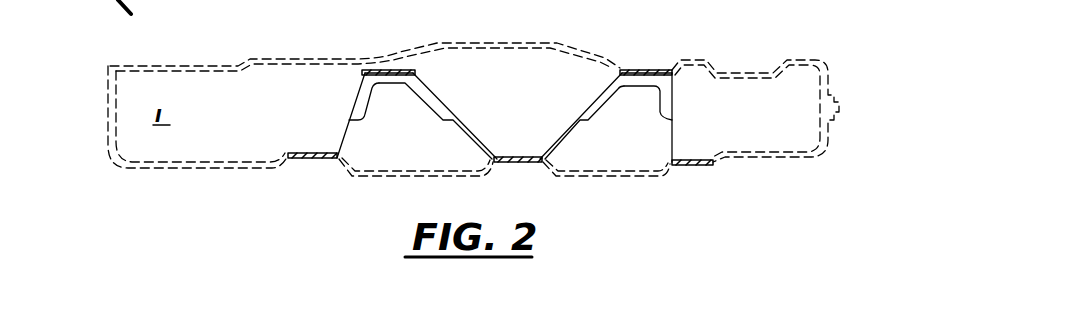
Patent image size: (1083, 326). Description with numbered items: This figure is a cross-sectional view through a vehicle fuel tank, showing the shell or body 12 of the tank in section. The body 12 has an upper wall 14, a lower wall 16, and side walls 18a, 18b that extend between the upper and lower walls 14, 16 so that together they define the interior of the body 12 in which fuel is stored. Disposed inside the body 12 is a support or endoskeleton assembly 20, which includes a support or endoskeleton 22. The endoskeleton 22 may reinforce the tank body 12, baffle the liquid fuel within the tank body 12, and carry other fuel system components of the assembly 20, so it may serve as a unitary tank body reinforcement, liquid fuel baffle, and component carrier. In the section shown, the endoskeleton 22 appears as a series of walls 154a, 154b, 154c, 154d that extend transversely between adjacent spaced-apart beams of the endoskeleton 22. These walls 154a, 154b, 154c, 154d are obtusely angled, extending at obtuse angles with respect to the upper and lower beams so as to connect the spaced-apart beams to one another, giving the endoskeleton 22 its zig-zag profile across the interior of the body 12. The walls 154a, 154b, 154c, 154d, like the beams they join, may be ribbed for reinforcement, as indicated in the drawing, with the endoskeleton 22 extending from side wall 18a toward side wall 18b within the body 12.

The body 12 is at (108, 63).
The upper wall 14 is at (207, 68).
The lower wall 16 is at (170, 172).
The side wall 18a is at (108, 107).
The side wall 18b is at (831, 92).
The endoskeleton assembly 20 is at (730, 103).
The endoskeleton 22 is at (492, 114).
The wall 154a is at (673, 113).
The wall 154b is at (557, 136).
The wall 154c is at (452, 110).
The wall 154d is at (352, 102).